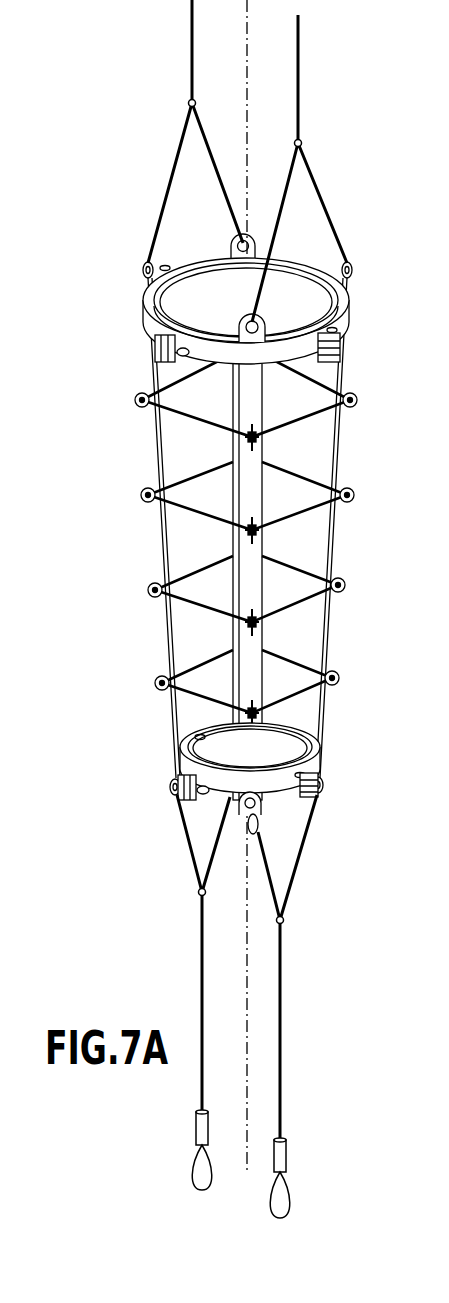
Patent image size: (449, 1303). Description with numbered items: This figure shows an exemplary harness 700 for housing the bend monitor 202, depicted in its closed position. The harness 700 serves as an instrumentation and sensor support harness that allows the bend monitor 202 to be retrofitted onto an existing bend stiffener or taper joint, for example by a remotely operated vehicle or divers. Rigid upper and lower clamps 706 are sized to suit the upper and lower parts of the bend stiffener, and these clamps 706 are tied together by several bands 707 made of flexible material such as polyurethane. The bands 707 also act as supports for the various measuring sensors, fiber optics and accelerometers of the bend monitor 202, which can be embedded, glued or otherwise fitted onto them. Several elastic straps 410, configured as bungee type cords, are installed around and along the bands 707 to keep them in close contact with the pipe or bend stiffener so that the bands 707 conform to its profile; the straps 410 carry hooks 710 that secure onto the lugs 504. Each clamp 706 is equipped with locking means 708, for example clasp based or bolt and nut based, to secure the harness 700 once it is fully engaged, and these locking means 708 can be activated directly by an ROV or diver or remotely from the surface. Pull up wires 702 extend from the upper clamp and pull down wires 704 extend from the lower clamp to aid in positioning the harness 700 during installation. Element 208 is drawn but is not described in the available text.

The harness 700 is at (357, 1048).
The pull up wires 702 is at (325, 153).
The pull down wires 704 is at (293, 978).
The clamps 706 is at (337, 325).
The bands 707 is at (338, 447).
The locking means 708 is at (150, 380).
The hooks 710 is at (246, 622).
The bend monitor 202 is at (153, 552).
The eyelet 208 is at (333, 550).
The straps 410 is at (295, 607).
The lugs 504 is at (339, 681).